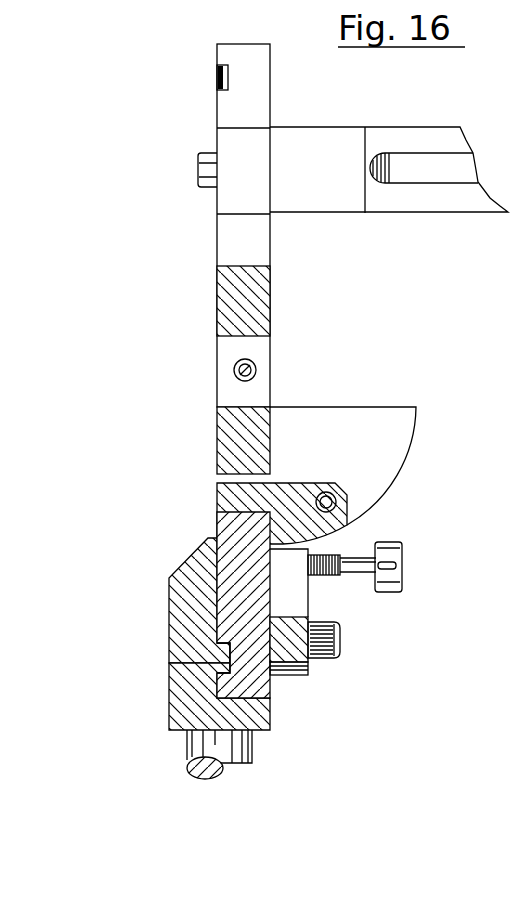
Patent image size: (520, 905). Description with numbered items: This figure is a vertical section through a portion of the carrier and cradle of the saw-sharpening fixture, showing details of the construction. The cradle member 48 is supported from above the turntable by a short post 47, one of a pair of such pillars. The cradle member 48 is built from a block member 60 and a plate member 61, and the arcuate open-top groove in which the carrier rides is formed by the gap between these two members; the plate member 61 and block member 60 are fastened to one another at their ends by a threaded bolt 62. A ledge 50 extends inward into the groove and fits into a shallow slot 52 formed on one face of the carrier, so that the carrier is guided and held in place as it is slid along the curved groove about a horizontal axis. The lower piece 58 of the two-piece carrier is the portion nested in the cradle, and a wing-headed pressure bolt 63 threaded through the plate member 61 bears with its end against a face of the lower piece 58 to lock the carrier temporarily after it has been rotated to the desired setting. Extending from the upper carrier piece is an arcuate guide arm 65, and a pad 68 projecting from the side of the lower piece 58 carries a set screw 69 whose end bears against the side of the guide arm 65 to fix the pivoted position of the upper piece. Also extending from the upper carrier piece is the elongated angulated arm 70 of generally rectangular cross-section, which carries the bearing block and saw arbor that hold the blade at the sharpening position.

The post 47 is at (253, 752).
The cradle member 48 is at (170, 593).
The ledge 50 is at (225, 663).
The shallow slot 52 is at (217, 78).
The lower piece 58 is at (217, 522).
The block member 60 is at (171, 736).
The plate member 61 is at (308, 598).
The threaded bolt 62 is at (340, 652).
The wing-headed pressure bolt 63 is at (402, 567).
The arcuate guide arm 65 is at (412, 445).
The pad 68 is at (285, 483).
The set screw 69 is at (330, 492).
The elongated angulated arm 70 is at (325, 215).